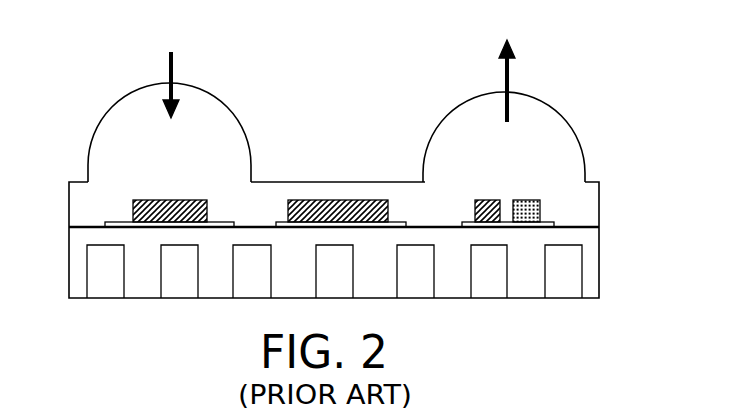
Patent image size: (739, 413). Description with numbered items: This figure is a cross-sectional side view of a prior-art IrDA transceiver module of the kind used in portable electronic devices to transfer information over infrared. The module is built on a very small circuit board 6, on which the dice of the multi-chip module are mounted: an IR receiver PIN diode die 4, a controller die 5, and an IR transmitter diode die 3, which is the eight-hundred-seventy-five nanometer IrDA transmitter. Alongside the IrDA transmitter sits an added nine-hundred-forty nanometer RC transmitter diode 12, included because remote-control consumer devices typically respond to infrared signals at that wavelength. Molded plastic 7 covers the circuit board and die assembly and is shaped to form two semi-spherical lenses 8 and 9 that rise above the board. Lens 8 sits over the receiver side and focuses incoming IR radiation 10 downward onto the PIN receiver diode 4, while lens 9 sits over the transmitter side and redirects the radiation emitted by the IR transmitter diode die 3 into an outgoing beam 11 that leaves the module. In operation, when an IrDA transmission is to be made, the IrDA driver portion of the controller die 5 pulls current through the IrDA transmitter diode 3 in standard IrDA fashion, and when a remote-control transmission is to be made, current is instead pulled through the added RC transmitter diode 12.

The IR transmitter diode die 3 is at (486, 200).
The IR receiver PIN diode die 4 is at (190, 200).
The controller die 5 is at (337, 200).
The circuit board 6 is at (600, 262).
The molded plastic 7 is at (395, 181).
The lens 8 is at (95, 106).
The lens 9 is at (578, 110).
The incoming IR radiation 10 is at (174, 64).
The beam 11 is at (504, 68).
The RC transmitter diode 12 is at (530, 200).